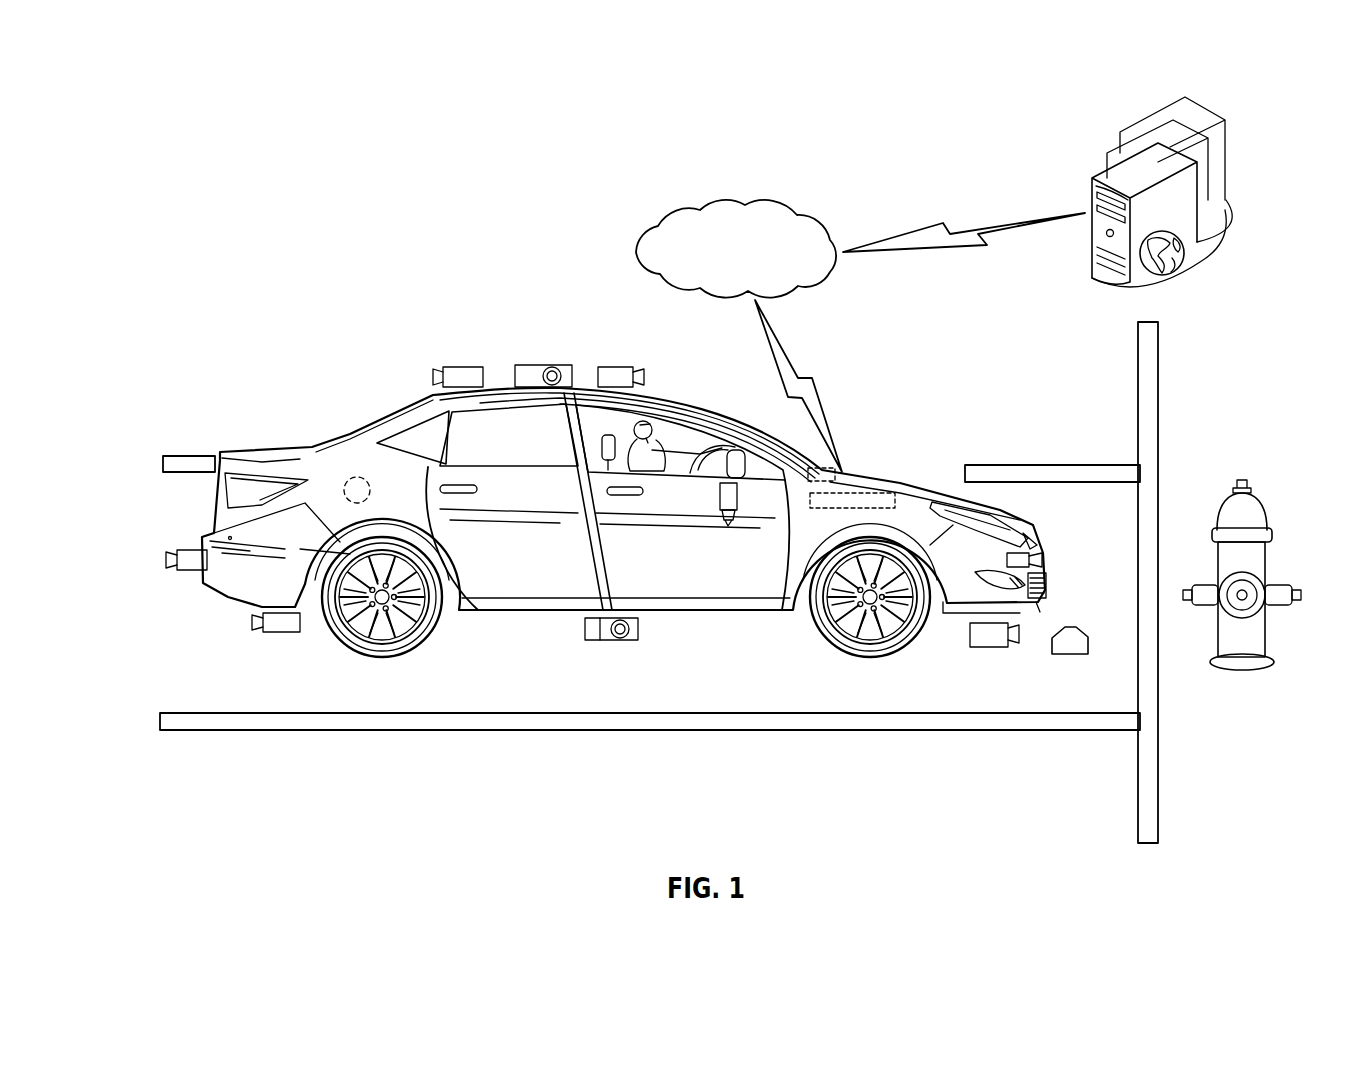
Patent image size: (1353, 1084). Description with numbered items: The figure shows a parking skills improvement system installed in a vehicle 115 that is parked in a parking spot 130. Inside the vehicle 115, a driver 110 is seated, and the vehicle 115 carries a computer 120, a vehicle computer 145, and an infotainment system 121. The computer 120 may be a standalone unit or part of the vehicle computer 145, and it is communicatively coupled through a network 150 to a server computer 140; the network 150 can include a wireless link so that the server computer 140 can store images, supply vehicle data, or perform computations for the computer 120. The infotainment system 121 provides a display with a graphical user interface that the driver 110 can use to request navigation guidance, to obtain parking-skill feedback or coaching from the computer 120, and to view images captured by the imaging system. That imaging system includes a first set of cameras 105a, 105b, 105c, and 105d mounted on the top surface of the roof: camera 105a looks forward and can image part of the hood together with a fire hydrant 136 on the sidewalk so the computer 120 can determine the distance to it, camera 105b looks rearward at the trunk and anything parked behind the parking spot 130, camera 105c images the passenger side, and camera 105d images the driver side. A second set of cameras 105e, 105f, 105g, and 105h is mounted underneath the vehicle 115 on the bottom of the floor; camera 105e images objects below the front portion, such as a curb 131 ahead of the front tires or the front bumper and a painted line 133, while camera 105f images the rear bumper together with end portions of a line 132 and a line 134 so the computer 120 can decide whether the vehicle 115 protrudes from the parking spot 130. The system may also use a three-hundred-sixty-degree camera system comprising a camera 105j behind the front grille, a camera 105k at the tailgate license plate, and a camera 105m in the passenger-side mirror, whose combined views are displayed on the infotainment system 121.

The camera 105a is at (618, 366).
The camera 105b is at (462, 366).
The camera 105c is at (560, 364).
The camera 105d is at (526, 364).
The camera 105e is at (988, 648).
The camera 105f is at (288, 633).
The camera 105g is at (635, 641).
The camera 105h is at (590, 641).
The camera 105j is at (1042, 561).
The camera 105k is at (177, 549).
The camera 105m is at (726, 526).
The driver 110 is at (618, 494).
The vehicle 115 is at (618, 494).
The computer 120 is at (871, 492).
The infotainment system 121 is at (818, 465).
The parking spot 130 is at (701, 582).
The curb 131 is at (1068, 656).
The line 132 is at (178, 455).
The line 133 is at (1148, 772).
The line 134 is at (943, 735).
The fire hydrant 136 is at (1242, 670).
The server computer 140 is at (1066, 166).
The vehicle computer 145 is at (892, 632).
The network 150 is at (777, 210).